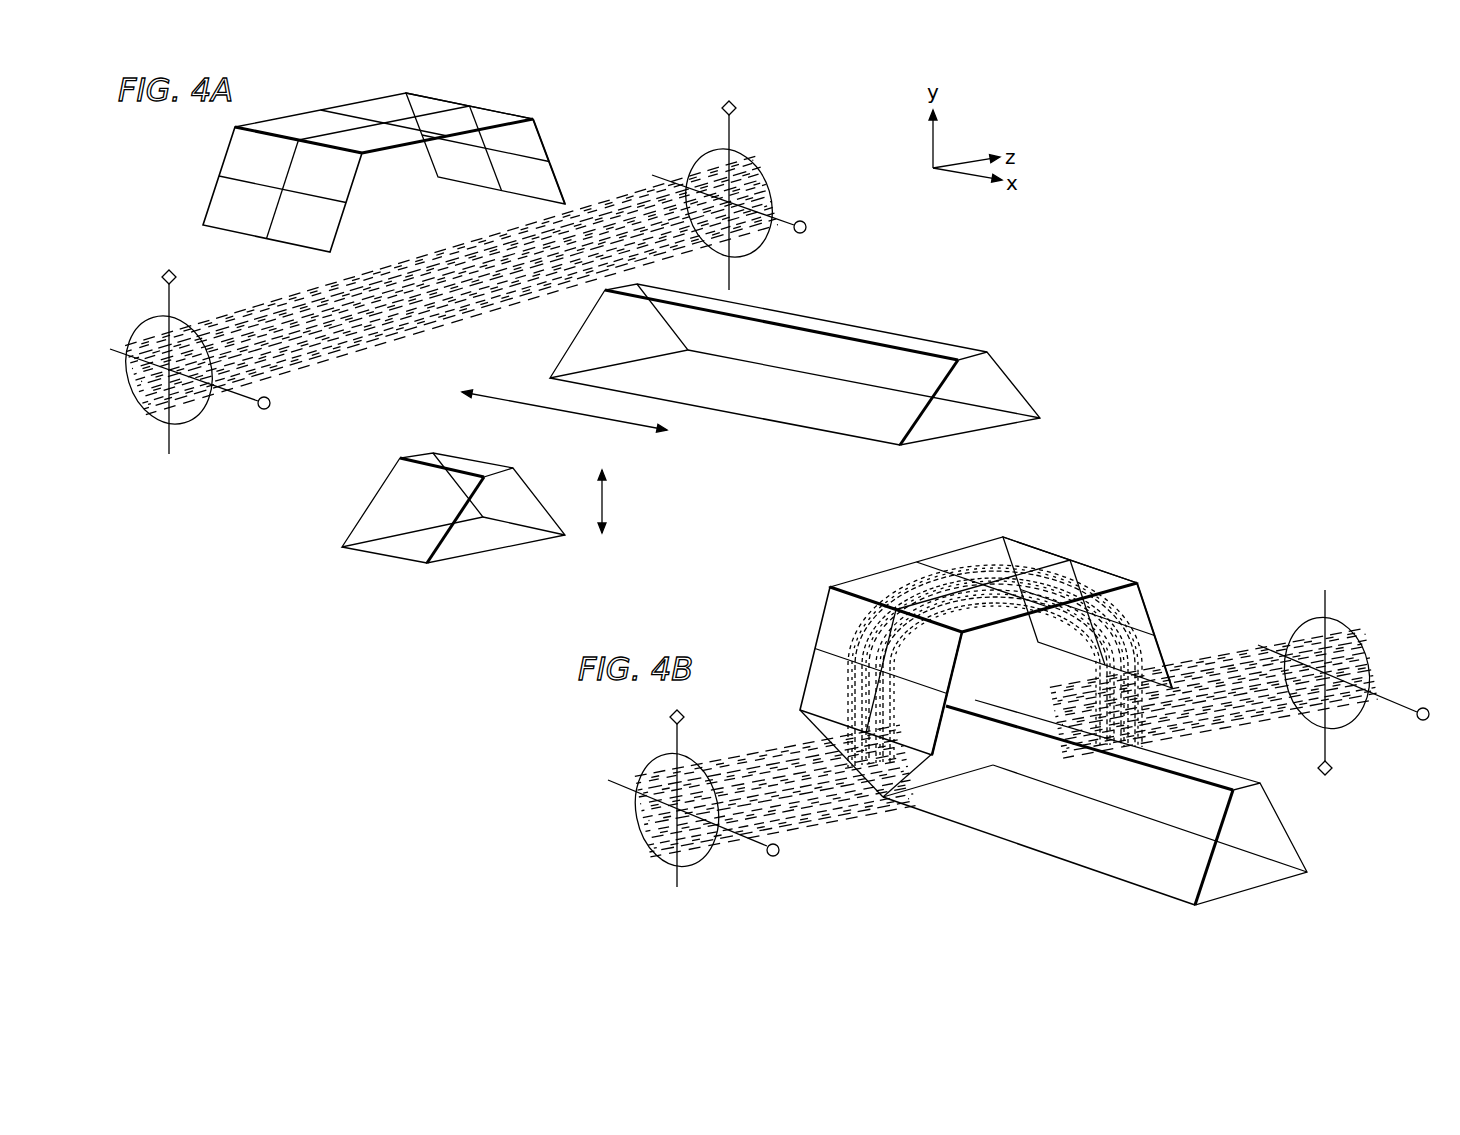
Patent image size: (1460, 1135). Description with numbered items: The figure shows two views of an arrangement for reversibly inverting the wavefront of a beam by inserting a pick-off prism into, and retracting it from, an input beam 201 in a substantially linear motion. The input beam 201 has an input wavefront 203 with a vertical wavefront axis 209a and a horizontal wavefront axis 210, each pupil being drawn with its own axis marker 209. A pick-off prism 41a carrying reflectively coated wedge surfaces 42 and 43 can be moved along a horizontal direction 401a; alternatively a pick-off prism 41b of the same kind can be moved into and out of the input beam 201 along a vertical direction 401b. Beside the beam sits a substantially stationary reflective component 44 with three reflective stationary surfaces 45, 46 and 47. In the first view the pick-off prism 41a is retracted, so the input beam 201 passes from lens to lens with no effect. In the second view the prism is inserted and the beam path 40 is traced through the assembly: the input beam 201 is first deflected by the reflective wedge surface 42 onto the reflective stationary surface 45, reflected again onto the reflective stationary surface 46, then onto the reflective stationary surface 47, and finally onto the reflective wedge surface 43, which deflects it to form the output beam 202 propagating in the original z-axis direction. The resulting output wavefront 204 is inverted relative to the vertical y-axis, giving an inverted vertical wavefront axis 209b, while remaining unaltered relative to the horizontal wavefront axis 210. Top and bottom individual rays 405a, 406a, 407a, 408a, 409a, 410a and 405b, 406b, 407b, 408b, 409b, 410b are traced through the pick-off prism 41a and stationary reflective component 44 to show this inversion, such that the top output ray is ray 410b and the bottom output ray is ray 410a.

In FIG. 4B, the light beam path through reflecting member 40 is at (1048, 527).
In FIG. 4A, the pick-off prism 41a is at (803, 365).
In FIG. 4B, the pick-off prism 41a is at (1099, 811).
In FIG. 4A, the pick-off prism 41b is at (400, 438).
In FIG. 4A, the reflective wedge surface 42 is at (912, 422).
In FIG. 4B, the reflective wedge surface 42 is at (1203, 870).
In FIG. 4A, the reflective wedge surface 43 is at (1010, 382).
In FIG. 4B, the reflective wedge surface 43 is at (1285, 827).
In FIG. 4A, the stationary reflective component 44 is at (383, 157).
In FIG. 4B, the stationary reflective component 44 is at (990, 646).
In FIG. 4A, the reflective stationary surface 45 is at (228, 160).
In FIG. 4B, the reflective stationary surface 45 is at (830, 622).
In FIG. 4A, the reflective stationary surface 46 is at (318, 118).
In FIG. 4B, the reflective stationary surface 46 is at (862, 583).
In FIG. 4A, the reflective stationary surface 47 is at (440, 162).
In FIG. 4B, the reflective stationary surface 47 is at (1168, 660).
In FIG. 4A, the input beam 201 is at (614, 172).
In FIG. 4B, the input beam 201 is at (816, 838).
In FIG. 4B, the output beam 202 is at (1221, 612).
In FIG. 4A, the input wavefront 203 is at (152, 413).
In FIG. 4B, the input wavefront 203 is at (643, 830).
In FIG. 4B, the output wavefront 204 is at (1350, 638).
In FIG. 4A, the optical axis marker 209 is at (163, 310).
In FIG. 4B, the vertical wavefront axis 209a is at (680, 877).
In FIG. 4B, the inverted vertical wavefront axis 209b is at (1332, 750).
In FIG. 4A, the horizontal wavefront axis 210 is at (110, 354).
In FIG. 4B, the horizontal wavefront axis 210 is at (622, 782).
In FIG. 4A, the horizontal direction 401a is at (563, 410).
In FIG. 4A, the vertical direction 401b is at (603, 503).
In FIG. 4B, the top individual ray 405a is at (733, 758).
In FIG. 4B, the bottom individual ray 405b is at (853, 812).
In FIG. 4B, the top individual ray 406a is at (990, 757).
In FIG. 4B, the bottom individual ray 406b is at (847, 713).
In FIG. 4B, the top individual ray 407a is at (897, 602).
In FIG. 4B, the bottom individual ray 407b is at (958, 668).
In FIG. 4B, the top individual ray 408a is at (992, 575).
In FIG. 4B, the bottom individual ray 408b is at (1077, 568).
In FIG. 4B, the top individual ray 409a is at (1140, 633).
In FIG. 4B, the bottom individual ray 409b is at (995, 720).
In FIG. 4B, the bottom output ray 410a is at (1267, 727).
In FIG. 4B, the top output ray 410b is at (1237, 650).